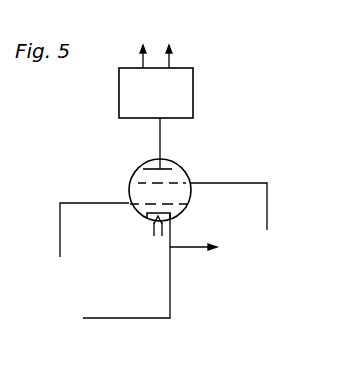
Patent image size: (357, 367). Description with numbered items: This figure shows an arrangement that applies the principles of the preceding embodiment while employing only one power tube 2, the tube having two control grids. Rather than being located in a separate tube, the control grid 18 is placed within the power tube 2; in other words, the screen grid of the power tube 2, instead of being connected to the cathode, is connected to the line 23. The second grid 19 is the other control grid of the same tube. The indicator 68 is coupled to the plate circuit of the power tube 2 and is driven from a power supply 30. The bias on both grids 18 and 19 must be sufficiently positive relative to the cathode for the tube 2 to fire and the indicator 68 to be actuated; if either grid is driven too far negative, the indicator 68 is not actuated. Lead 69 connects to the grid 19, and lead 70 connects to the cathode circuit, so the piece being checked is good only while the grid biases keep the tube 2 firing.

The power tube 2 is at (136, 168).
The control grid 18 is at (185, 183).
The grid 19 is at (136, 204).
The line 23 is at (268, 222).
The power source 30 is at (207, 144).
The indicator 68 is at (193, 80).
The lead 69 is at (59, 250).
The lead 70 is at (125, 318).